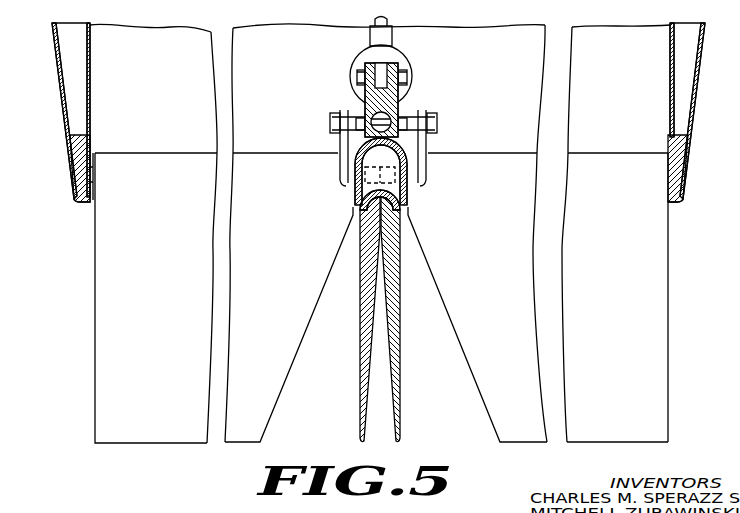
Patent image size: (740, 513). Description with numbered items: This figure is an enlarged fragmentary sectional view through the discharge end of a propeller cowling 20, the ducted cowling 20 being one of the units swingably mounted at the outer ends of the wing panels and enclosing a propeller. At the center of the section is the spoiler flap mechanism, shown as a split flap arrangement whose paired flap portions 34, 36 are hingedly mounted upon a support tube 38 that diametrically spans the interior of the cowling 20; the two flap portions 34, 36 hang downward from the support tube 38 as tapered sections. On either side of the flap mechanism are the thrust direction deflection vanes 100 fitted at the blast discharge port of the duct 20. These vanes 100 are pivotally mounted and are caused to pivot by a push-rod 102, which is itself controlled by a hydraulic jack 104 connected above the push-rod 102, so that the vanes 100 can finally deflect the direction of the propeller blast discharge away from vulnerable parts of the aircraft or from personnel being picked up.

The propeller cowling 20 is at (700, 95).
The flap portion 34 is at (358, 392).
The flap portion 36 is at (402, 388).
The support tube 38 is at (409, 197).
The thrust direction deflection vane 100 is at (148, 416).
The push-rod 102 is at (400, 104).
The hydraulic jack 104 is at (405, 47).